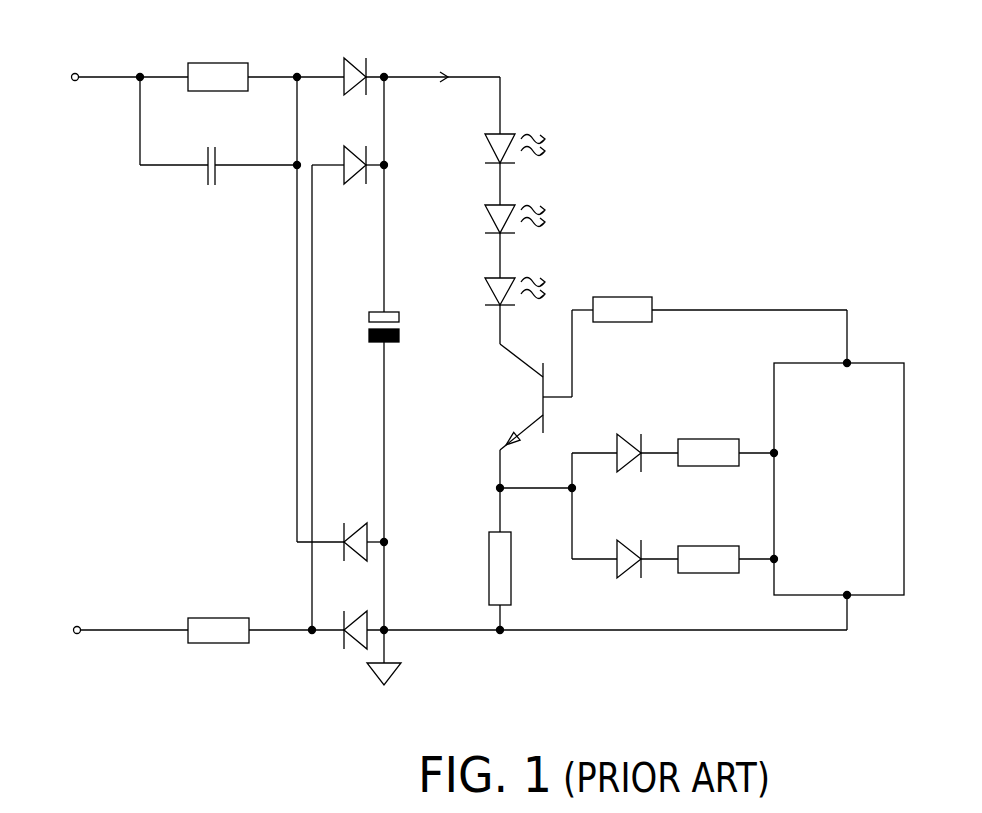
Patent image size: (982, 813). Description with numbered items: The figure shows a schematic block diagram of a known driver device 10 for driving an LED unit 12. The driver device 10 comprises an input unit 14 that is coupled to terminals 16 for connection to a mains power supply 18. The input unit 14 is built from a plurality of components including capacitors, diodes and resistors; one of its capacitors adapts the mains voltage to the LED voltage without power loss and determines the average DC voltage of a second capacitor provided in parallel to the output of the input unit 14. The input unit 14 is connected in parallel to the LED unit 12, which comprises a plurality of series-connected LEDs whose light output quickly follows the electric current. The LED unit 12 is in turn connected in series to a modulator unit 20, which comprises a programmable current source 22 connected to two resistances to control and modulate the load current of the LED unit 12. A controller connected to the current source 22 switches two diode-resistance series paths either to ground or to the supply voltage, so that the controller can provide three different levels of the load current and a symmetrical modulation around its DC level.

The driver device 10 is at (487, 382).
The LED unit 12 is at (584, 173).
The input unit 14 is at (191, 678).
The terminals 16 is at (77, 73).
The mains power supply 18 is at (82, 353).
The modulator unit 20 is at (650, 660).
The programmable current source 22 is at (515, 360).